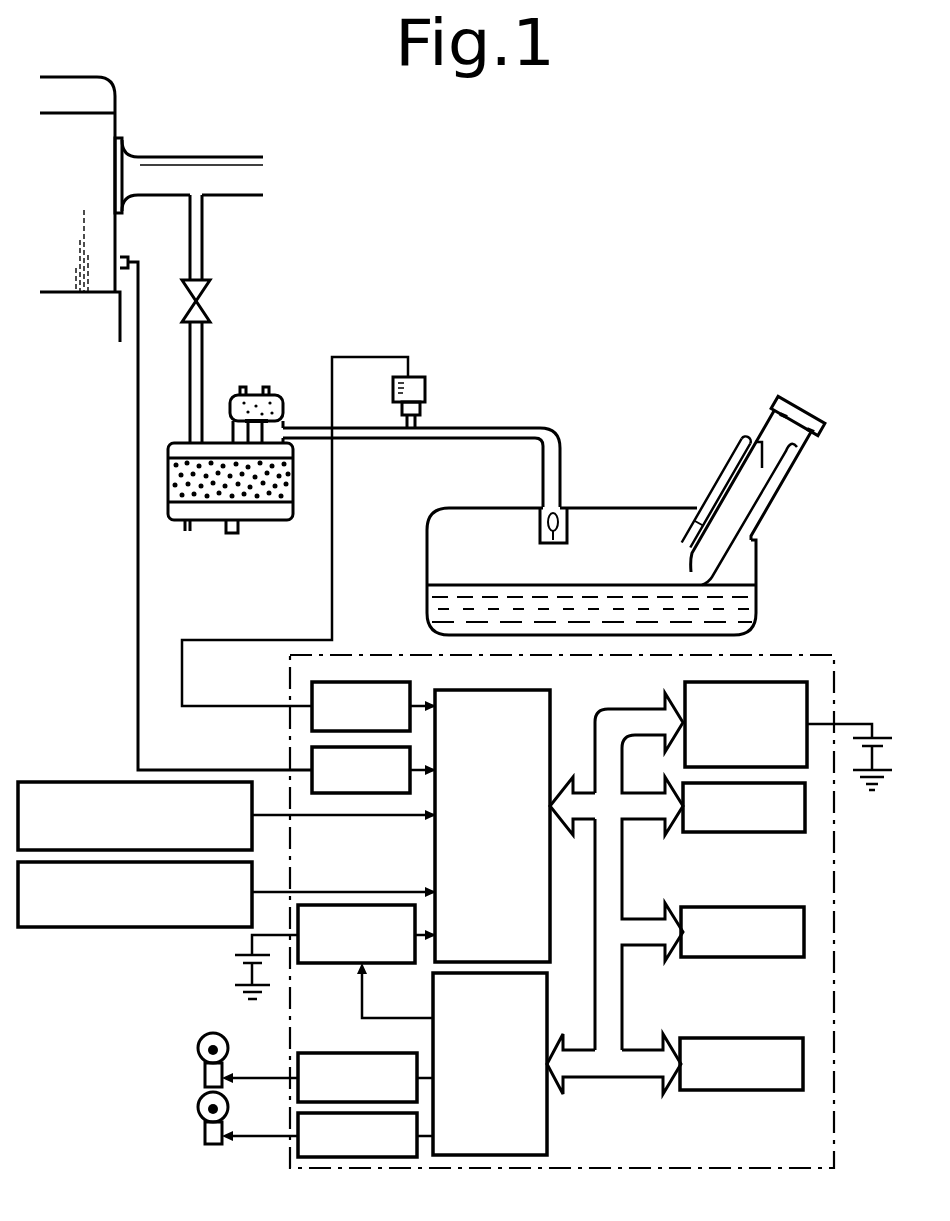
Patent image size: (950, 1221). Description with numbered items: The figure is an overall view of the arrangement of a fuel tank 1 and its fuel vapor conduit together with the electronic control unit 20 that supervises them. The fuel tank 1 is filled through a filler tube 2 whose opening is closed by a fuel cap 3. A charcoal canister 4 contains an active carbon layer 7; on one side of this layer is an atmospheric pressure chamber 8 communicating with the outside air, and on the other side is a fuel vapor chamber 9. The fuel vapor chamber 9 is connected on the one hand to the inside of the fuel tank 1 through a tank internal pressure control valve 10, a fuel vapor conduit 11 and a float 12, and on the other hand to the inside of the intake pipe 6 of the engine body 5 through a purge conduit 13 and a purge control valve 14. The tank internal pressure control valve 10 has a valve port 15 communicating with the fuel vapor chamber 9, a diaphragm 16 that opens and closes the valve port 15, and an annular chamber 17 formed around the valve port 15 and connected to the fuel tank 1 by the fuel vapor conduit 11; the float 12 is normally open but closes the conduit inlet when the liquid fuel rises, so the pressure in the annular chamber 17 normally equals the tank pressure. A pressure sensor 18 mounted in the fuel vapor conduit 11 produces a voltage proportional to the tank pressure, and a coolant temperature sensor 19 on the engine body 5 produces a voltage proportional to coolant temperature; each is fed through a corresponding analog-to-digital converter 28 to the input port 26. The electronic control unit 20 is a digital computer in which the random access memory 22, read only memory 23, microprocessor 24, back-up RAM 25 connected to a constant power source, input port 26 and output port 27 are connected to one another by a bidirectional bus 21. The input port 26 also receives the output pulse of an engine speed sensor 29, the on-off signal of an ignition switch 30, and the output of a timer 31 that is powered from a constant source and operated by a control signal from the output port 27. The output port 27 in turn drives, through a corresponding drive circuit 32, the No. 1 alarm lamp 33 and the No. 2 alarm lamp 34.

The fuel tank 1 is at (634, 508).
The filler tube 2 is at (781, 488).
The fuel cap 3 is at (804, 397).
The charcoal canister 4 is at (187, 532).
The engine body 5 is at (118, 97).
The intake pipe 6 is at (170, 155).
The active carbon layer 7 is at (298, 487).
The atmospheric pressure chamber 8 is at (265, 522).
The fuel vapor chamber 9 is at (180, 447).
The tank internal pressure control valve 10 is at (242, 388).
The fuel vapor conduit 11 is at (478, 428).
The float 12 is at (567, 530).
The purge conduit 13 is at (205, 337).
The purge control valve 14 is at (206, 290).
The valve port 15 is at (255, 432).
The diaphragm 16 is at (270, 397).
The annular chamber 17 is at (288, 430).
The pressure sensor 18 is at (420, 380).
The coolant temperature sensor 19 is at (127, 260).
The electronic control unit 20 is at (838, 691).
The bidirectional bus 21 is at (593, 722).
The random access memory 22 is at (790, 832).
The read only memory 23 is at (790, 957).
The microprocessor 24 is at (790, 1090).
The back-up RAM 25 is at (666, 692).
The input port 26 is at (550, 728).
The output port 27 is at (547, 1135).
The analog-to-digital converter 28 is at (312, 698).
The engine speed sensor 29 is at (45, 782).
The ignition switch 30 is at (40, 928).
The timer 31 is at (333, 967).
The drive circuit 32 is at (298, 1060).
The No. 1 alarm lamp 33 is at (205, 1072).
The No. 2 alarm lamp 34 is at (205, 1130).